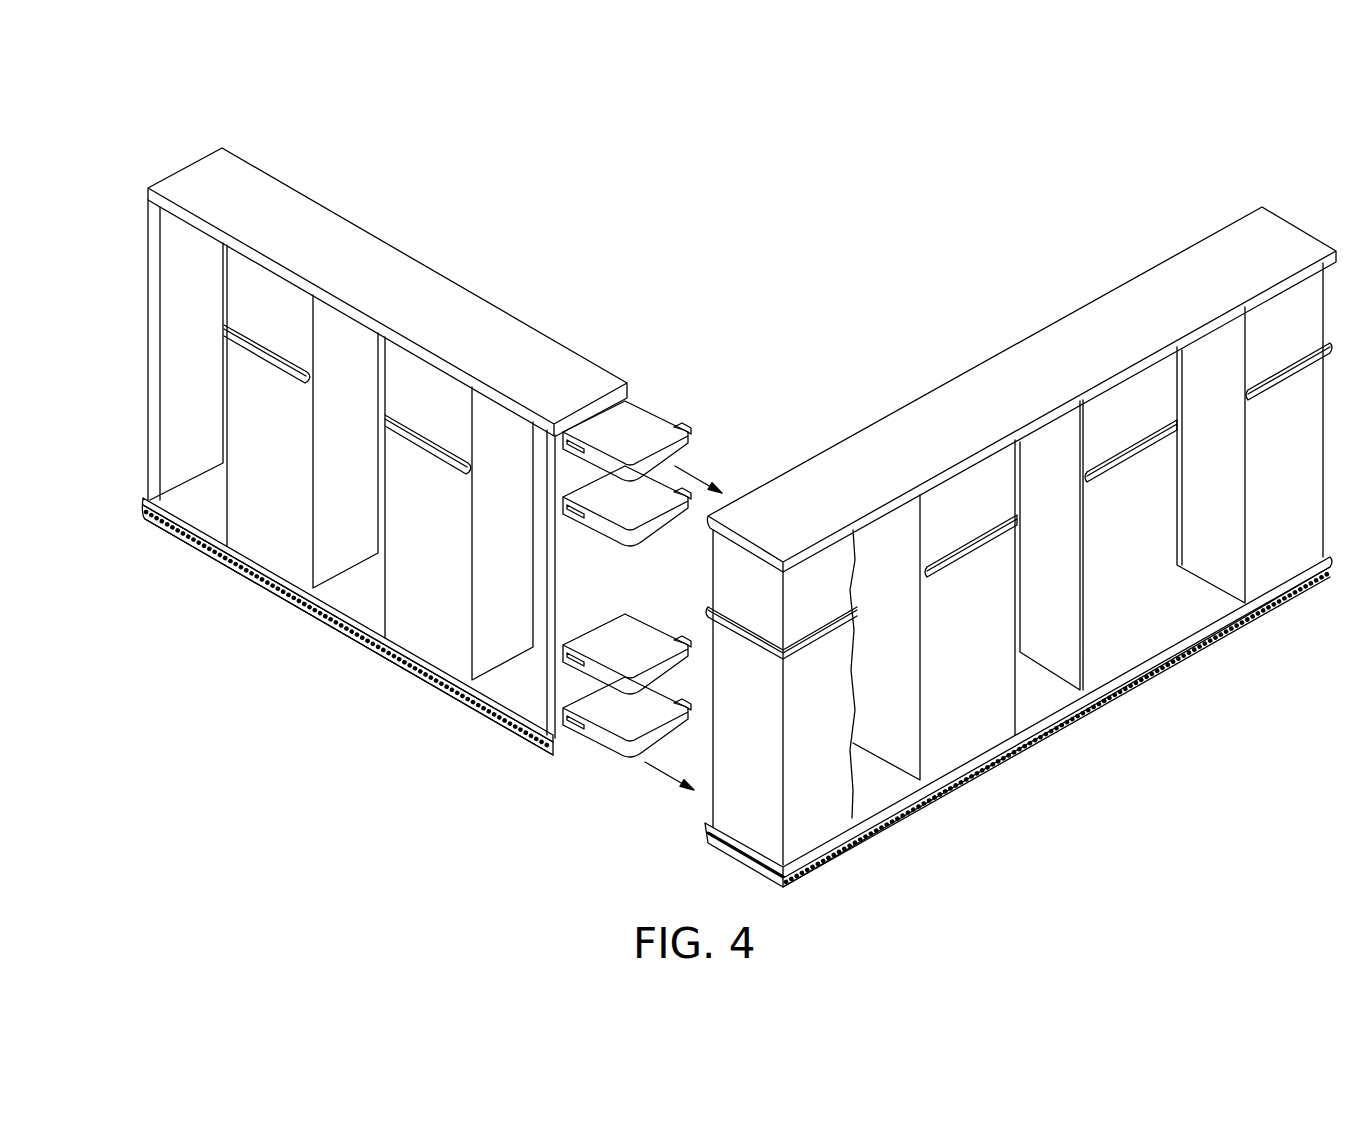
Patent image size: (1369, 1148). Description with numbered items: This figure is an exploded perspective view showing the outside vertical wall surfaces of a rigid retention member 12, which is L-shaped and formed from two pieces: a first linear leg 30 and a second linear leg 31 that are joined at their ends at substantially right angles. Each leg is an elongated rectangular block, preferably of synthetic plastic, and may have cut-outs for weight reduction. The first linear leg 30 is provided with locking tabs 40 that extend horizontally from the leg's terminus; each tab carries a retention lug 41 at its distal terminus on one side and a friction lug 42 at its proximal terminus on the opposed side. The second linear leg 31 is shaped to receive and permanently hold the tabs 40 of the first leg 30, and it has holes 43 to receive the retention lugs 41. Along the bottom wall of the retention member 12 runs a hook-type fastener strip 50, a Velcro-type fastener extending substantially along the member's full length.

The rigid retention member 12 is at (308, 158).
The first linear leg 30 is at (445, 265).
The second linear leg 31 is at (992, 345).
The locking tabs 40 is at (641, 414).
The retention lug 41 is at (690, 431).
The friction lug 42 is at (561, 440).
The holes 43 is at (861, 538).
The hook-type fastener strip 50 is at (496, 716).